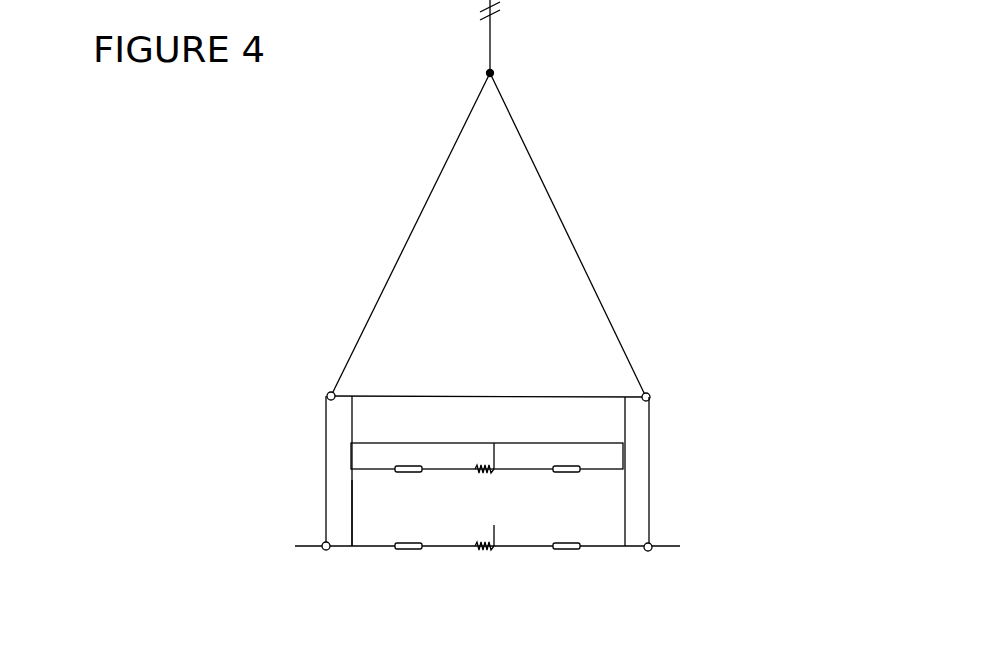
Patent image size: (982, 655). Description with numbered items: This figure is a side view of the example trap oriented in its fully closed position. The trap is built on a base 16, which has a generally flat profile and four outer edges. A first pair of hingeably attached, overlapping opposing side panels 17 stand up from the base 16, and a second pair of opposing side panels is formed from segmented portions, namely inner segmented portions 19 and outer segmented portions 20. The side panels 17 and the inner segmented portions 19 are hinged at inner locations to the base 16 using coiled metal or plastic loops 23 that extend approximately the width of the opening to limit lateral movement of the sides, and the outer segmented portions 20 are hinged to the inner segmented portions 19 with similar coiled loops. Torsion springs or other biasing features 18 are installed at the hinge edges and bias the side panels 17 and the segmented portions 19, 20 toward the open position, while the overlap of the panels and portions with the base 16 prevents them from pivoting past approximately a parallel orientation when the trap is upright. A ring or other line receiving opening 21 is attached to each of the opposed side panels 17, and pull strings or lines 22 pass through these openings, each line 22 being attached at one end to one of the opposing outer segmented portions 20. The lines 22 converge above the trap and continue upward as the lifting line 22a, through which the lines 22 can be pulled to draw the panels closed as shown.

The base 16 is at (303, 547).
The side panels 17 is at (326, 462).
The torsion springs 18 is at (476, 570).
The inner segmented portions 19 is at (352, 508).
The outer segmented portions 20 is at (493, 395).
The line receiving opening 21 is at (327, 396).
The lines 22 is at (415, 220).
The lifting line 22a is at (491, 45).
The coiled loops 23 is at (409, 474).